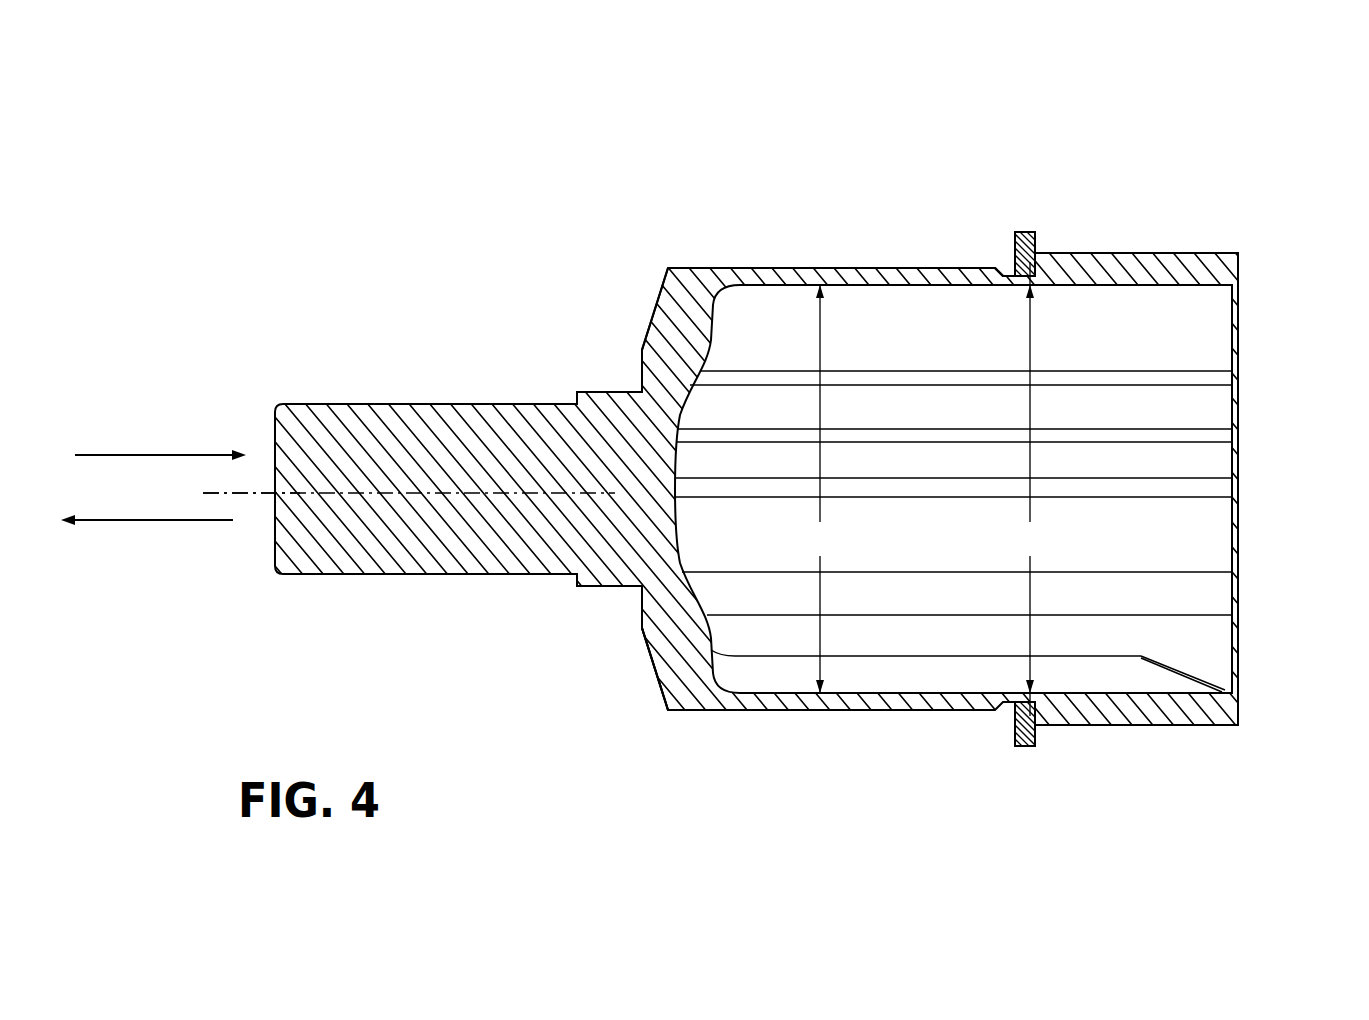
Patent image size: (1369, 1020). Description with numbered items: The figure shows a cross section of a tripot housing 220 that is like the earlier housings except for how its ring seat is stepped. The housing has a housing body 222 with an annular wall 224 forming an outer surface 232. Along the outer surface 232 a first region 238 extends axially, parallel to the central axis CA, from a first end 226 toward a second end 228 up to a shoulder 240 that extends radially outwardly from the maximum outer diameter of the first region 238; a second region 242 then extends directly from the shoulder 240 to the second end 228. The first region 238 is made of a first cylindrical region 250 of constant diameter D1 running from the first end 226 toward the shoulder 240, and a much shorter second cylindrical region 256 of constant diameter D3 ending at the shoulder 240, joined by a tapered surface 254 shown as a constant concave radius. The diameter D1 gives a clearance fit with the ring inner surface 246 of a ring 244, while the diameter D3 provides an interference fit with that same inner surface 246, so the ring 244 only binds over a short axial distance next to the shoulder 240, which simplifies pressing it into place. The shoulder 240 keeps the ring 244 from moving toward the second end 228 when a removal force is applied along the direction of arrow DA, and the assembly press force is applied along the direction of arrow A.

The tripot housing 220 is at (1168, 170).
The housing body 222 is at (688, 677).
The annular wall 224 is at (1212, 250).
The first end 226 is at (649, 650).
The second end 228 is at (1240, 708).
The outer surface 232 is at (1117, 250).
The first region 238 is at (1033, 758).
The shoulder 240 is at (1013, 732).
The second region 242 is at (1238, 758).
The ring 244 is at (1036, 256).
The ring inner surface 246 is at (1022, 288).
The first cylindrical region 250 is at (990, 215).
The tapered surface 254 is at (997, 262).
The second cylindrical region 256 is at (1035, 236).
The diameter of first cylindrical region D1 is at (819, 489).
The diameter of second cylindrical region D3 is at (1034, 489).
The disassembly direction arrow DA is at (157, 453).
The assembly direction arrow A is at (153, 522).
The central axis CA is at (242, 497).